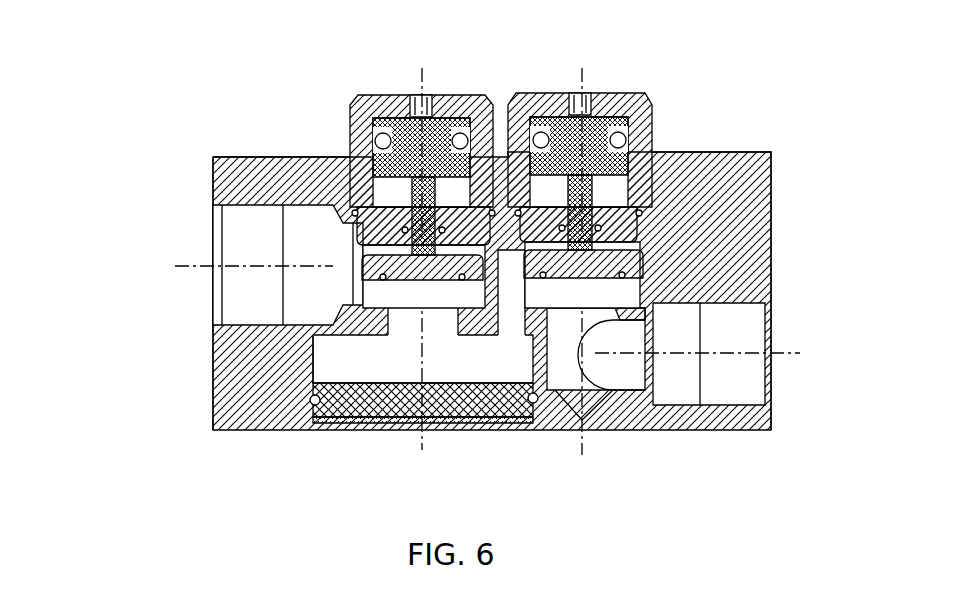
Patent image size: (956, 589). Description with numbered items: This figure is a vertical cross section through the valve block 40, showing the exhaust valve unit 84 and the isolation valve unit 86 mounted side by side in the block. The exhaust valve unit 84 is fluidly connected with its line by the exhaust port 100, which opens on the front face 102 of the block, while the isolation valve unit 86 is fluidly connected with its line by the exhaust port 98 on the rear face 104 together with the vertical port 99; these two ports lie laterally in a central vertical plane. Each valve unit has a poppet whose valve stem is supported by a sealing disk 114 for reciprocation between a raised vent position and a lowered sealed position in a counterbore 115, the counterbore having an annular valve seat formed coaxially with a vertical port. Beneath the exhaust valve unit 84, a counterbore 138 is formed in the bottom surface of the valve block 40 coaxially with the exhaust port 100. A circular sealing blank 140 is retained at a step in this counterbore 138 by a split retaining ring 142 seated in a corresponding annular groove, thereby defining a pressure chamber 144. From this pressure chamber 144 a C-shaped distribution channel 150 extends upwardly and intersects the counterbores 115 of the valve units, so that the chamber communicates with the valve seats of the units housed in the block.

The valve block 40 is at (230, 407).
The exhaust valve unit 84 is at (353, 95).
The isolation valve unit 86 is at (645, 93).
The exhaust port 98 is at (737, 390).
The vertical port 99 is at (568, 373).
The exhaust port 100 is at (252, 257).
The front face 102 is at (213, 177).
The rear face 104 is at (771, 187).
The sealing disk 114 is at (375, 283).
The counterbore 115 is at (632, 283).
The counterbore 138 is at (328, 350).
The circular sealing blank 140 is at (400, 420).
The split retaining ring 142 is at (317, 427).
The pressure chamber 144 is at (423, 316).
The C-shaped distribution channel 150 is at (533, 413).